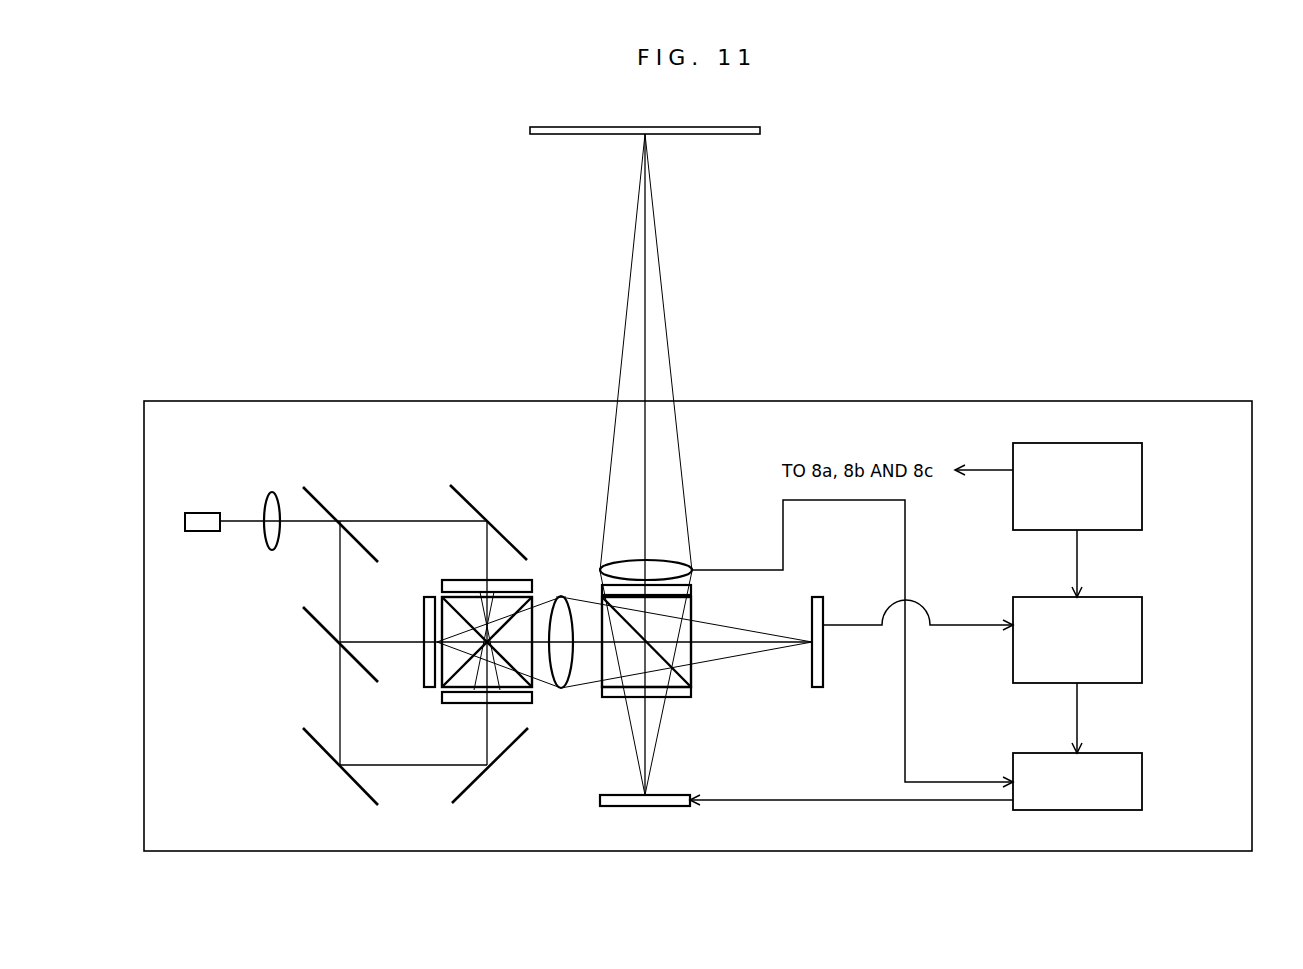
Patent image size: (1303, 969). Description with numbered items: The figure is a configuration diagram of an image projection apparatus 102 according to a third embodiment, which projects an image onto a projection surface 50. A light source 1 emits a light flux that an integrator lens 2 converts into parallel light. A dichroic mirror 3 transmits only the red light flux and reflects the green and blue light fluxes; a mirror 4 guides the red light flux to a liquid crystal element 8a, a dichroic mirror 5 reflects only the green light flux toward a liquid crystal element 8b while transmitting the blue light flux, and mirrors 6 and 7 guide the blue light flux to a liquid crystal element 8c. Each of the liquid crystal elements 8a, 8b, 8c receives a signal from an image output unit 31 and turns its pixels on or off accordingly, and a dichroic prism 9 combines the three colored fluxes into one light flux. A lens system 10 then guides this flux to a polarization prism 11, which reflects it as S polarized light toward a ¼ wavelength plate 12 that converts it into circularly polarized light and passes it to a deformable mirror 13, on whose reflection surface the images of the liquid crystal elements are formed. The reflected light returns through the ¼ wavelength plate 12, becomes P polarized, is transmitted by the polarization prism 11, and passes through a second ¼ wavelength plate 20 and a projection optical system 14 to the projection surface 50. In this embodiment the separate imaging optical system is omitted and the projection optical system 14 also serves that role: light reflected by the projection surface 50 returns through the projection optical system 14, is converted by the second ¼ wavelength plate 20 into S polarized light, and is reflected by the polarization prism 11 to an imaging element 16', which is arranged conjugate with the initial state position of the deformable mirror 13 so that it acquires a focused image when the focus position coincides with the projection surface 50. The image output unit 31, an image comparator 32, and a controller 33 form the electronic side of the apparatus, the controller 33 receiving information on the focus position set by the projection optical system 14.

The light source 1 is at (207, 513).
The integrator lens 2 is at (270, 492).
The dichroic mirror 3 is at (312, 487).
The mirror 4 is at (459, 487).
The dichroic mirror 5 is at (303, 613).
The mirror 6 is at (305, 740).
The mirror 7 is at (476, 786).
The liquid crystal element 8a is at (460, 581).
The liquid crystal element 8b is at (423, 612).
The liquid crystal element 8c is at (455, 704).
The dichroic prism 9 is at (556, 684).
The lens system 10 is at (561, 596).
The polarization prism 11 is at (692, 680).
The ¼ wavelength plate 12 is at (690, 698).
The deformable mirror 13 is at (650, 807).
The projection optical system 14 is at (693, 568).
The imaging element 16' is at (831, 603).
The second ¼ wavelength plate 20 is at (692, 585).
The image output unit 31 is at (1143, 470).
The image comparator 32 is at (1143, 617).
The controller 33 is at (1143, 770).
The projection surface 50 is at (530, 131).
The image projection apparatus 102 is at (916, 400).